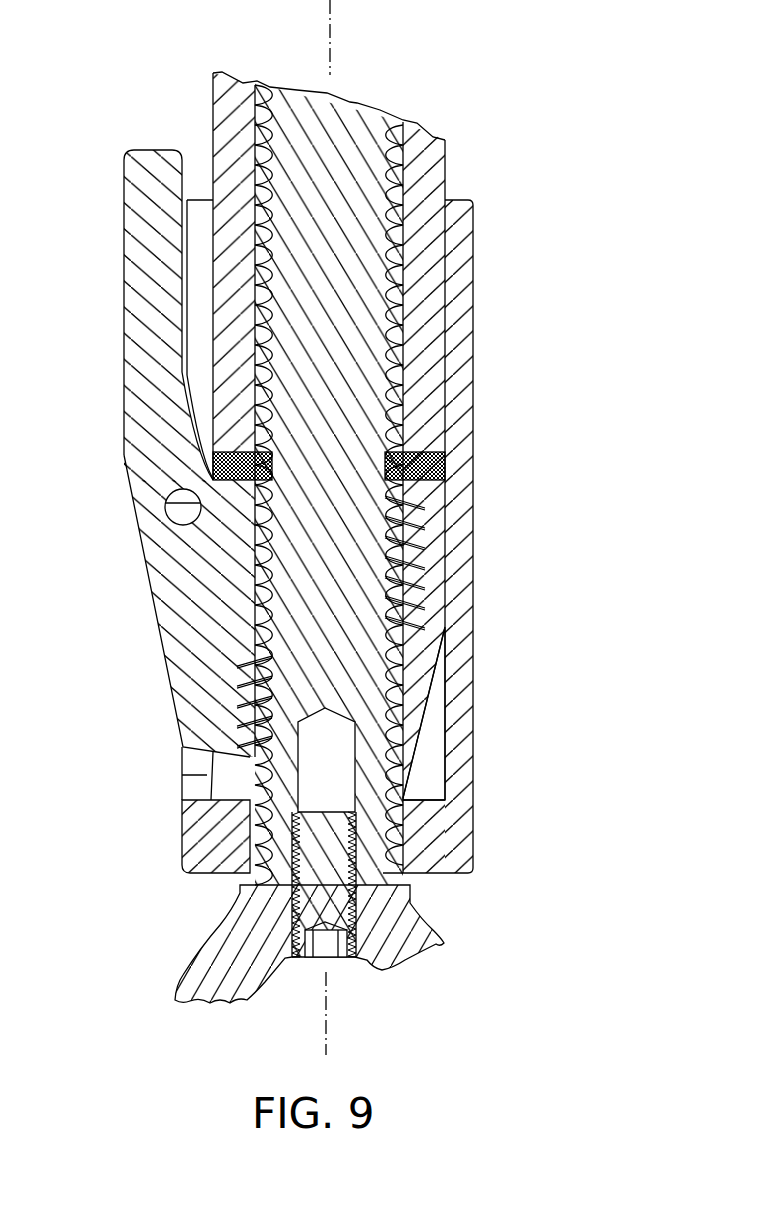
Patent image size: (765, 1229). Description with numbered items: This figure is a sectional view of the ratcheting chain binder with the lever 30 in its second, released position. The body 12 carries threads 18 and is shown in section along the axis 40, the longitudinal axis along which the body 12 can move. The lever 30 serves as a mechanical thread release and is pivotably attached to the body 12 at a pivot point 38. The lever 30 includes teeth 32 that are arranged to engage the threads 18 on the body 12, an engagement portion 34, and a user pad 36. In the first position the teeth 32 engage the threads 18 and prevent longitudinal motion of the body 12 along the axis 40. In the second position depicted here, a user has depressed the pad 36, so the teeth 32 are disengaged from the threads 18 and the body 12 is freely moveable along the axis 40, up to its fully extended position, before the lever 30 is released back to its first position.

The body 12 is at (466, 363).
The threads 18 is at (398, 178).
The lever 30 is at (140, 248).
The teeth 32 is at (240, 678).
The engagement portion 34 is at (165, 607).
The user pad 36 is at (140, 310).
The pivot point 38 is at (165, 498).
The axis 40 is at (330, 33).